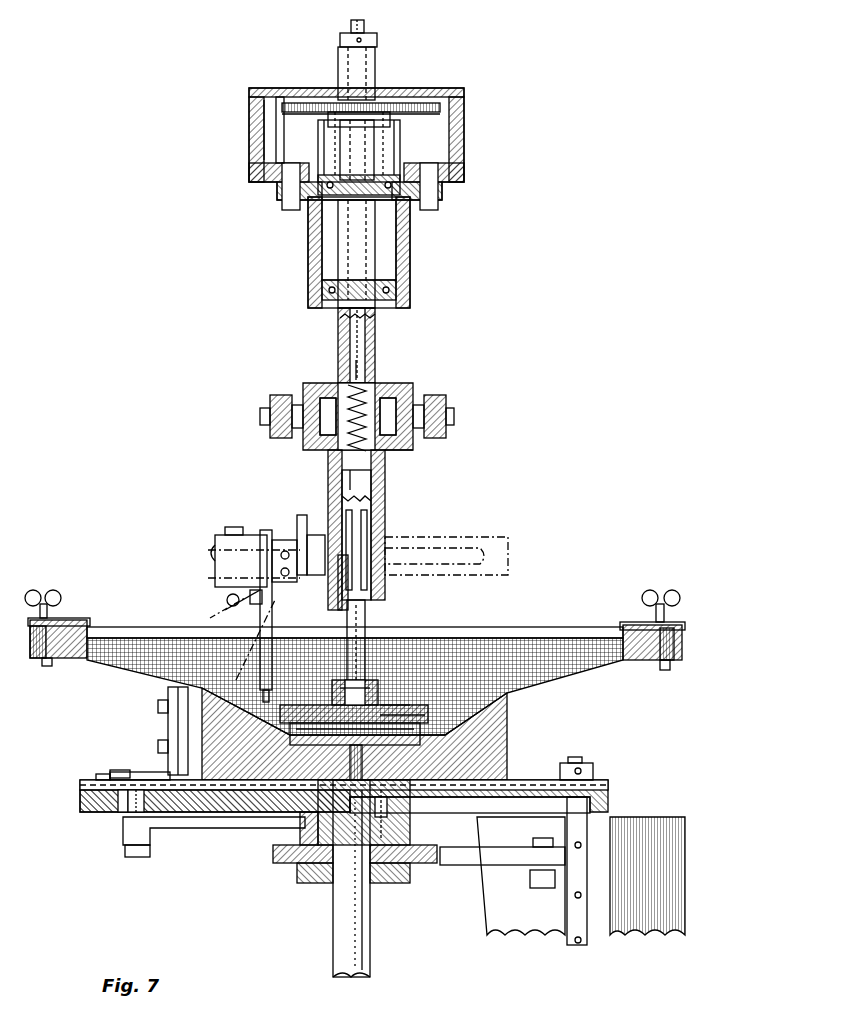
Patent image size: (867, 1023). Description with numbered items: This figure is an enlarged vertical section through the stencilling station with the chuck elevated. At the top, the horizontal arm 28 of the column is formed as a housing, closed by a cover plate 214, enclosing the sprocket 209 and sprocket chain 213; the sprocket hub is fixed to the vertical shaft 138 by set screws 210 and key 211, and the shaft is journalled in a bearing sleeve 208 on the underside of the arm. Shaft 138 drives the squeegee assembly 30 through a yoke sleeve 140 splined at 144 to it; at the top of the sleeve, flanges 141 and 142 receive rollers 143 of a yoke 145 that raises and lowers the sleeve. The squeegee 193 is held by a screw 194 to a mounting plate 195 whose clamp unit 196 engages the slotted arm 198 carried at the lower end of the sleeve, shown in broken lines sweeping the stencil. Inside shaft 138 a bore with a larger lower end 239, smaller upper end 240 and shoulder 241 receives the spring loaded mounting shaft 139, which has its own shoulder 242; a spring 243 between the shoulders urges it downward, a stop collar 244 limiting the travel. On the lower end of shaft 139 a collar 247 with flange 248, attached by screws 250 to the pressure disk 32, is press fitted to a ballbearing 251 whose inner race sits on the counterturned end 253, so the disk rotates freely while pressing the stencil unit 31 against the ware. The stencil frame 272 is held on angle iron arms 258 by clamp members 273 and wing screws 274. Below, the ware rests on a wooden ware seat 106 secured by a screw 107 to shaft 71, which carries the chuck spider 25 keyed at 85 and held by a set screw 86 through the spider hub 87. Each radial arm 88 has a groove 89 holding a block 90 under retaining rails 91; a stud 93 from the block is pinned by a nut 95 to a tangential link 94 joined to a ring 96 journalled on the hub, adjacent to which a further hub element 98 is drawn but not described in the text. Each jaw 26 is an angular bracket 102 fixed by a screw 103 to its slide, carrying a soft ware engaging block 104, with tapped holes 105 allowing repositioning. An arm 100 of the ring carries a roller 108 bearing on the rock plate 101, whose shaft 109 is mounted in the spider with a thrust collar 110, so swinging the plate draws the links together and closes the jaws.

The spring loaded mounting shaft 139 is at (364, 26).
The stop collar 244 is at (340, 40).
The vertical shaft 138 is at (375, 62).
The cover plate 214 is at (272, 98).
The sprocket chain 213 is at (413, 103).
The horizontal arm 28 is at (466, 135).
The set screws 210 is at (330, 131).
The key 211 is at (340, 151).
The sprocket 209 is at (388, 138).
The bearing sleeve 208 is at (410, 230).
The upper end of bore 240 is at (373, 320).
The shoulder 241 is at (365, 366).
The spring 243 is at (344, 382).
The flange 141 is at (400, 381).
The rollers 143 is at (308, 396).
The yoke 145 is at (278, 396).
The flange 142 is at (413, 446).
The lower end of bore 239 is at (346, 449).
The shoulder 242 is at (345, 480).
The squeegee assembly 30 is at (386, 487).
The yoke sleeve 140 is at (386, 518).
The spline 144 is at (344, 584).
The clamp unit 196 is at (276, 539).
The mounting plate 195 is at (278, 568).
The slotted arm 198 is at (312, 543).
The screw 194 is at (250, 600).
The squeegee 193 is at (272, 645).
The stencil unit 31 is at (535, 626).
The rectangular frame 272 is at (585, 627).
The clamp members 273 is at (70, 617).
The wing screws 274 is at (35, 591).
The angle iron arms 258 is at (684, 636).
The pressure disk 32 is at (408, 714).
The ware seat 106 is at (507, 708).
The screws 250 is at (308, 700).
The counterturned lower end 253 is at (332, 689).
The ballbearing 251 is at (342, 676).
The collar 247 is at (386, 699).
The flange 248 is at (408, 707).
The screw 107 is at (362, 761).
The ware engaging block 104 is at (178, 686).
The angular bracket 102 is at (158, 696).
The jaws 26 is at (170, 719).
The screw 103 is at (118, 769).
The chuck spider 25 is at (608, 784).
The groove 89 is at (82, 791).
The arm 88 is at (98, 811).
The block 90 is at (100, 778).
The retaining rails 91 is at (167, 774).
The stud 93 is at (134, 812).
The link 94 is at (172, 834).
The nut 95 is at (140, 857).
The tapped holes 105 is at (226, 813).
The spider hub 87 is at (300, 838).
The set screw 86 is at (388, 825).
The key 85 is at (390, 805).
The ring 96 is at (290, 853).
The flange 98 is at (388, 882).
The shaft 71 is at (355, 947).
The thrust collar 110 is at (593, 766).
The shaft 109 is at (590, 749).
The rock plate 101 is at (656, 828).
The arm 100 is at (496, 863).
The roller 108 is at (540, 888).